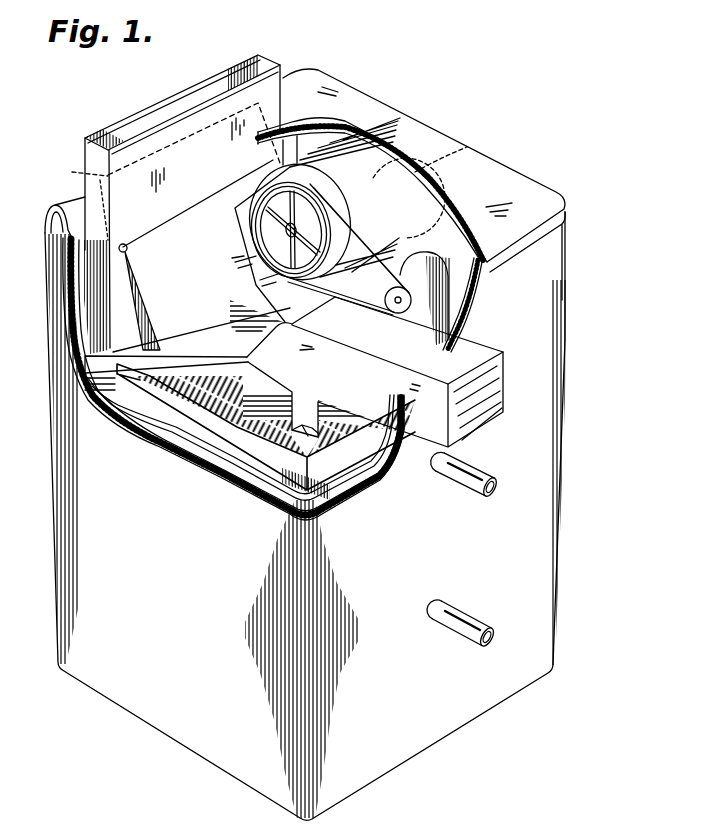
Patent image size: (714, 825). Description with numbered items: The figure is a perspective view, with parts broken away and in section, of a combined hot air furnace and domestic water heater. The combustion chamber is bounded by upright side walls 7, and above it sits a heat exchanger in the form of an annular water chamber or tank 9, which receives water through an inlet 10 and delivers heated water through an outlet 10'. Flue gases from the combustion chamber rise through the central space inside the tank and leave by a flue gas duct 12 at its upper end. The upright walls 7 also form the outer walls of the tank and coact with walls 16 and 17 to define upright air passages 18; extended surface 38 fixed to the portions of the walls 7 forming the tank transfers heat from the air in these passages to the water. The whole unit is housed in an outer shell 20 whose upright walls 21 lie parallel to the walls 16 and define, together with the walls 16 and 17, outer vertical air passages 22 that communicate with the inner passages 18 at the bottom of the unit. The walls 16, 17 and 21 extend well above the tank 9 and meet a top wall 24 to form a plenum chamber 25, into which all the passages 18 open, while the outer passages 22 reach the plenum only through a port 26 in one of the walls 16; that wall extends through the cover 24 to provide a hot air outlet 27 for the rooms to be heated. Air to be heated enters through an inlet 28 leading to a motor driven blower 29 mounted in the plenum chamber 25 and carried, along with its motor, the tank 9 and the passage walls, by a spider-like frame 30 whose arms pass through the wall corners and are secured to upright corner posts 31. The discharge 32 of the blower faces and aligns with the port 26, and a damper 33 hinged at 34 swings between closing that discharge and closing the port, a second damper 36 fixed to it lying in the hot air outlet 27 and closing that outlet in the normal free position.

The upright side walls 7 is at (248, 409).
The water chamber or tank 9 is at (218, 394).
The inlet 10 is at (471, 628).
The outlet 10' is at (479, 481).
The flue gas duct 12 is at (478, 420).
The walls 16 is at (222, 181).
The walls 17 is at (355, 518).
The upright air passages 18 is at (200, 468).
The outer shell 20 is at (569, 470).
The upright walls 21 is at (122, 428).
The vertical air passages 22 is at (248, 492).
The top wall 24 is at (508, 239).
The plenum chamber 25 is at (450, 200).
The port 26 is at (132, 304).
The hot air outlet 27 is at (118, 118).
The inlet 28 is at (467, 147).
The motor driven blower 29 is at (342, 203).
The spider-like frame 30 is at (248, 356).
The upright corner posts 31 is at (44, 216).
The discharge 32 is at (248, 258).
The damper 33 is at (207, 314).
The hinge 34 is at (160, 232).
The second damper 36 is at (79, 173).
The extended surface 38 is at (222, 480).